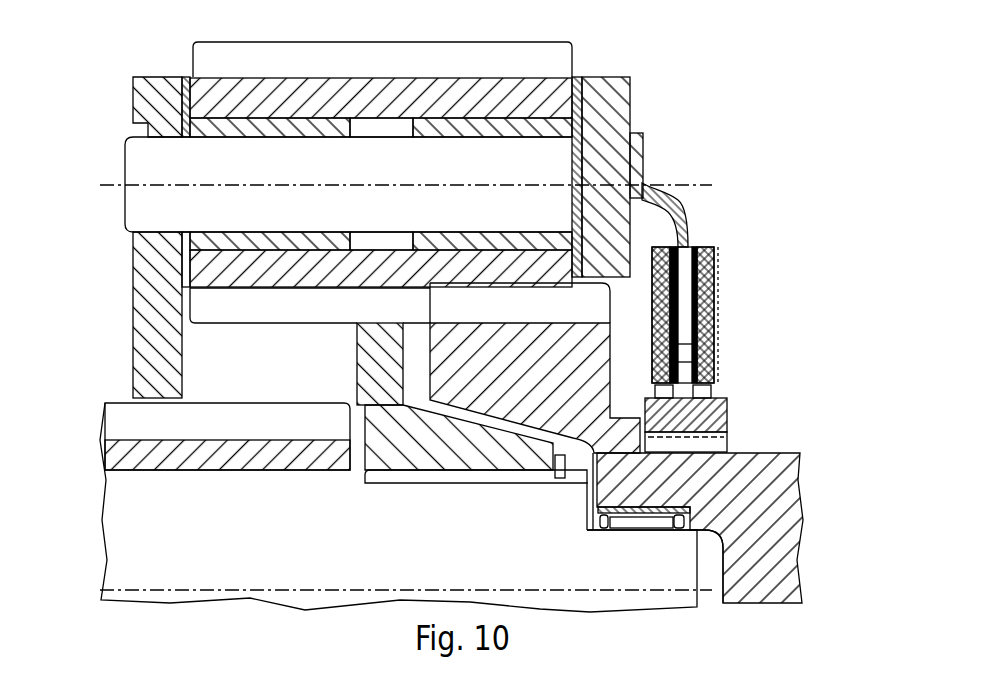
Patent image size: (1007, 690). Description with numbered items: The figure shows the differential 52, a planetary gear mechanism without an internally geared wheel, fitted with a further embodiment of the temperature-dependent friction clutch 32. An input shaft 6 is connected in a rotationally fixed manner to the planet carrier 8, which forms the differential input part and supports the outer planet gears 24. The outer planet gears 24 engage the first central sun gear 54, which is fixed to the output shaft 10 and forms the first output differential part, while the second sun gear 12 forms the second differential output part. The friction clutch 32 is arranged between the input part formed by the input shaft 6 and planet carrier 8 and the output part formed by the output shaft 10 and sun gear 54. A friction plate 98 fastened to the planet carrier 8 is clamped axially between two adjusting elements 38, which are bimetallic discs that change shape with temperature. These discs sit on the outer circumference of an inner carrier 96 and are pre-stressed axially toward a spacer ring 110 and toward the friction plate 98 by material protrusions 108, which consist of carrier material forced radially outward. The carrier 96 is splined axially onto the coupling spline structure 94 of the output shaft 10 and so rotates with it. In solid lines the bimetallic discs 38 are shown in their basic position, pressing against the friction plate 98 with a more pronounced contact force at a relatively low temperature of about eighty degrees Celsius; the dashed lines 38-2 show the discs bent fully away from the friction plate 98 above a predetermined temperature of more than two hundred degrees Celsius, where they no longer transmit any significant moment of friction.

The input shaft 6 is at (112, 525).
The planet carrier 8 is at (583, 79).
The output shaft 10 is at (778, 522).
The second sun gear 12 is at (118, 414).
The outer planet gears 24 is at (537, 89).
The friction clutch 32 is at (752, 318).
The adjusting element 38 is at (714, 284).
The dashed-line position of bimetallic discs 38-2 is at (654, 247).
The differential 52 is at (122, 59).
The first central sun gear 54 is at (393, 343).
The coupling spline structure 94 is at (745, 440).
The inner carrier 96 is at (724, 418).
The friction plate 98 is at (688, 204).
The material protrusions 108 is at (652, 387).
The spacer ring 110 is at (714, 356).